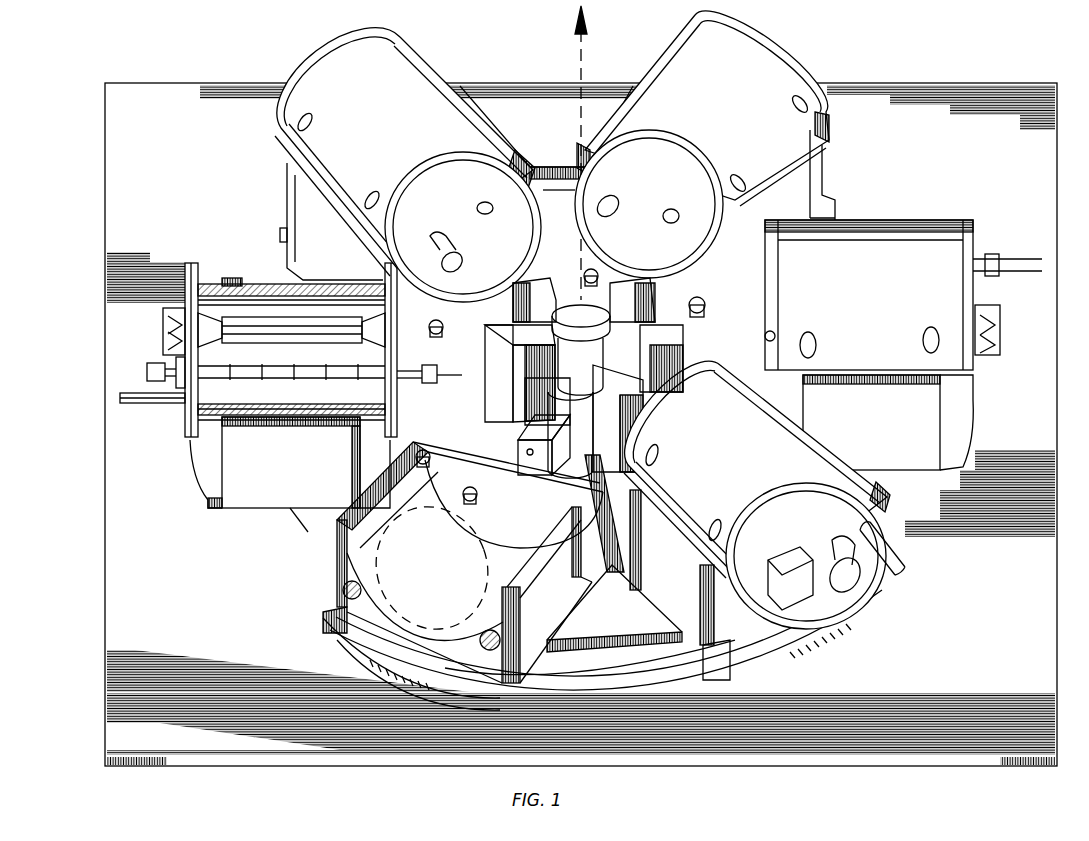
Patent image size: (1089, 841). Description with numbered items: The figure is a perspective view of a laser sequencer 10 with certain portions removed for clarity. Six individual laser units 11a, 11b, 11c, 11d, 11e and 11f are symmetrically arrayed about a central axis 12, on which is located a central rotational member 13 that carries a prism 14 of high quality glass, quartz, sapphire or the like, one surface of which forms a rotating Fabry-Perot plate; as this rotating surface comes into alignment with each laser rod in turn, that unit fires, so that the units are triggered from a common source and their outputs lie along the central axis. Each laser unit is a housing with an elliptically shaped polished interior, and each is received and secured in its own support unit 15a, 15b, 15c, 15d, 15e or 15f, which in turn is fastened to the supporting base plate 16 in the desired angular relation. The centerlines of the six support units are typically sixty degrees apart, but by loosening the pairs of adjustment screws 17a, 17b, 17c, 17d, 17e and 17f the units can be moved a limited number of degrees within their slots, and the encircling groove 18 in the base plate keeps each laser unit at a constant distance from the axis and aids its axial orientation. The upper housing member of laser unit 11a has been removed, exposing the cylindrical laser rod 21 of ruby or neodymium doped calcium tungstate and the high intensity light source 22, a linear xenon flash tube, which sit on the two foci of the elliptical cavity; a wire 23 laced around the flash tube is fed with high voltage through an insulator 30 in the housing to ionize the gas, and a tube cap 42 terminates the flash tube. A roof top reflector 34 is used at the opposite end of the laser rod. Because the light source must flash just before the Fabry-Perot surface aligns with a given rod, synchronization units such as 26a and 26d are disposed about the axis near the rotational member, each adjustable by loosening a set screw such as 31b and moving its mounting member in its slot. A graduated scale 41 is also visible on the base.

The laser sequencer 10 is at (105, 140).
The laser unit 11a is at (190, 264).
The laser unit 11b is at (472, 550).
The laser unit 11c is at (848, 608).
The laser unit 11d is at (925, 238).
The laser unit 11e is at (805, 78).
The laser unit 11f is at (440, 90).
The central axis 12 is at (583, 60).
The central rotational member 13 is at (632, 310).
The prism 14 is at (579, 391).
The support unit 15a is at (258, 505).
The support unit 15b is at (333, 632).
The support unit 15c is at (712, 674).
The support unit 15d is at (870, 382).
The support unit 15e is at (808, 190).
The support unit 15f is at (287, 188).
The base plate 16 is at (650, 625).
The adjustment screws 17a is at (432, 458).
The adjustment screws 17b is at (477, 492).
The adjustment screws 17c is at (613, 525).
The adjustment screws 17d is at (772, 334).
The adjustment screws 17e is at (583, 272).
The adjustment screws 17f is at (442, 326).
The encircling groove 18 is at (605, 665).
The laser rod 21 is at (318, 338).
The high intensity light source 22 is at (298, 380).
The wire 23 is at (230, 410).
The synchronization unit 26a is at (490, 392).
The synchronization unit 26d is at (668, 372).
The insulator 30 is at (120, 397).
The set screw 31b is at (536, 460).
The roof top reflector 34 is at (1000, 335).
The scale 41 is at (378, 667).
The tube cap 42 is at (463, 262).